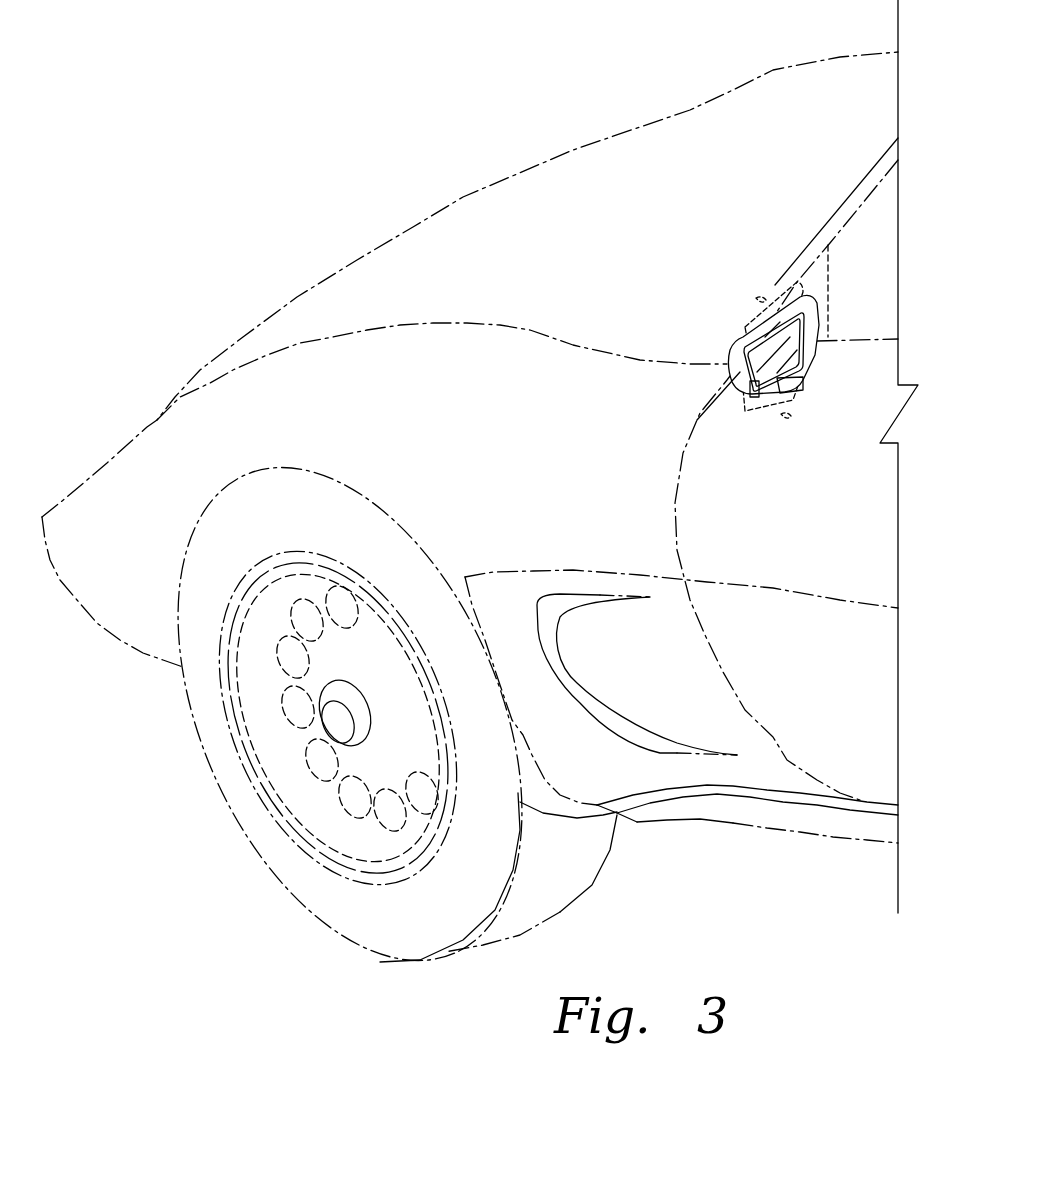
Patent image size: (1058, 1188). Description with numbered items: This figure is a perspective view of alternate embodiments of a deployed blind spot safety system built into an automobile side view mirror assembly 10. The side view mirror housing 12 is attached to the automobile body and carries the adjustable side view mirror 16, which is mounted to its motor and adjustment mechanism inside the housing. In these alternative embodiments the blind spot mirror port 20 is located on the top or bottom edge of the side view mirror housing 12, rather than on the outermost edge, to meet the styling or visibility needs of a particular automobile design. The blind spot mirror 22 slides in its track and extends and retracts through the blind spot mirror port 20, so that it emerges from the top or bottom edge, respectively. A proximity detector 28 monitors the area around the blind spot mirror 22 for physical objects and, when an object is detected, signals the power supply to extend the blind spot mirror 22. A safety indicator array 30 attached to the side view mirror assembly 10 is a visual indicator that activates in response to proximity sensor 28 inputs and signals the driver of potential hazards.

The side view mirror assembly 10 is at (653, 267).
The side view mirror housing 12 is at (738, 360).
The adjustable side view mirror 16 is at (750, 350).
The blind spot mirror port 20 is at (750, 338).
The blind spot mirror 22 is at (760, 300).
The proximity detector 28 is at (795, 390).
The safety indicator array 30 is at (753, 399).